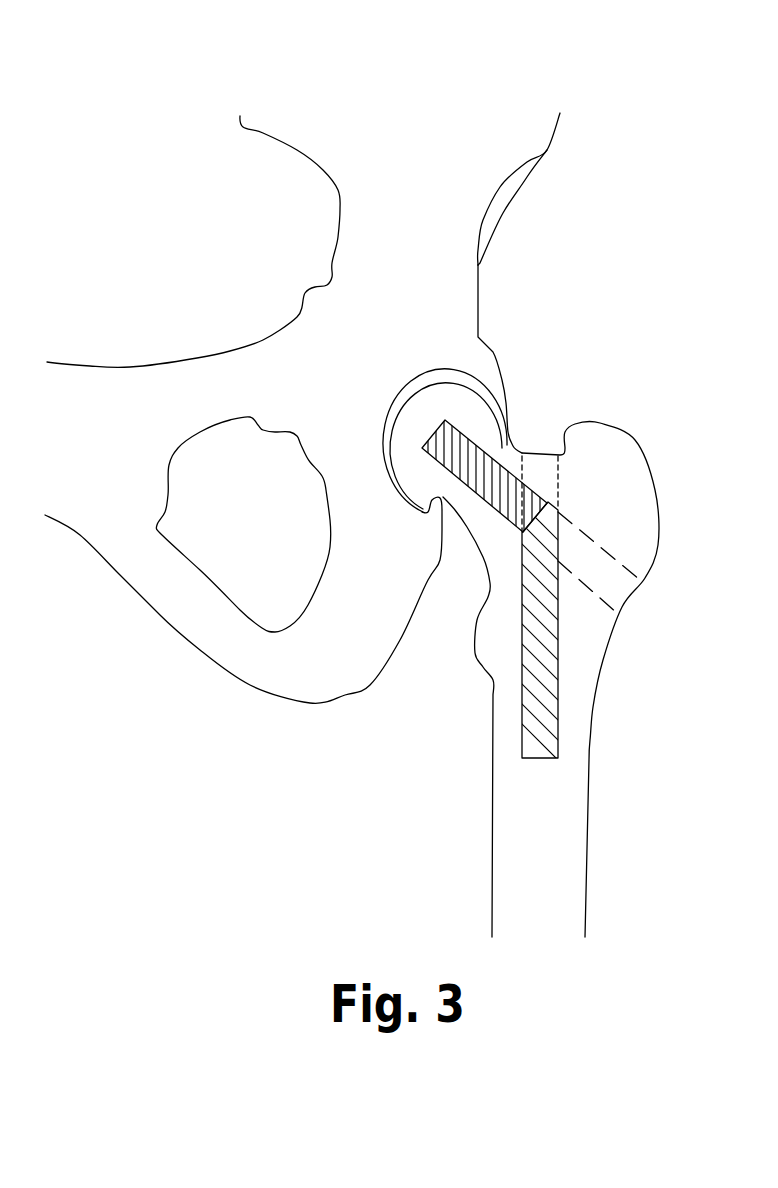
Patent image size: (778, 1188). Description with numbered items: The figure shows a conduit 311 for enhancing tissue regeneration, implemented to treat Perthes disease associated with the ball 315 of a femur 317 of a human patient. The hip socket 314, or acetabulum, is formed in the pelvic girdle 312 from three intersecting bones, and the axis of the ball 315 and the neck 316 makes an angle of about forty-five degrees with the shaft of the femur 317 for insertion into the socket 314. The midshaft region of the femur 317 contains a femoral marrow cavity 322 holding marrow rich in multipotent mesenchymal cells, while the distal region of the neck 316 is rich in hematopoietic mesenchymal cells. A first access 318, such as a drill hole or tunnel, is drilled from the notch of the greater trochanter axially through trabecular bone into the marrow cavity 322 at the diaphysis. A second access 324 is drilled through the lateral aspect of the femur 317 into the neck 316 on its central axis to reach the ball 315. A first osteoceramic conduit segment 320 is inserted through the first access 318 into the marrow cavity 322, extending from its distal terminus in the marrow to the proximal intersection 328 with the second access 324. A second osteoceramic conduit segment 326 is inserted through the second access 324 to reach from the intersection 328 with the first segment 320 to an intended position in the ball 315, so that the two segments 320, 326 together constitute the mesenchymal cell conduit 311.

The conduit 311 is at (145, 108).
The pelvic girdle 312 is at (427, 169).
The hip socket 314 is at (403, 377).
The ball 315 is at (441, 399).
The neck 316 is at (519, 447).
The first access 318 is at (556, 444).
The second osteoceramic conduit segment 326 is at (480, 465).
The intersection 328 is at (550, 517).
The first osteoceramic conduit segment 320 is at (534, 667).
The second access 324 is at (635, 598).
The femur 317 is at (575, 775).
The femoral marrow cavity 322 is at (550, 830).